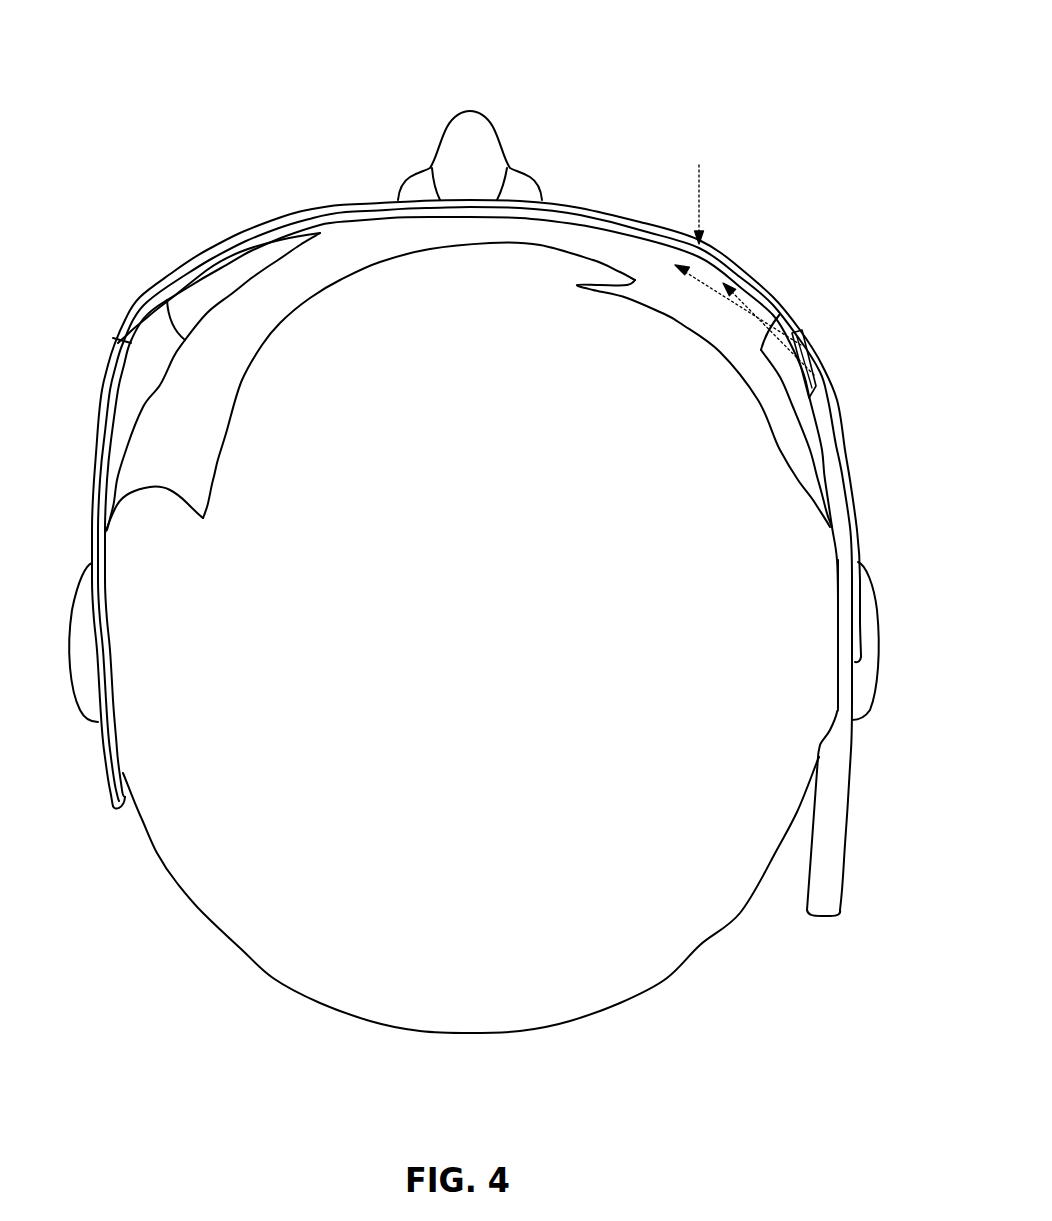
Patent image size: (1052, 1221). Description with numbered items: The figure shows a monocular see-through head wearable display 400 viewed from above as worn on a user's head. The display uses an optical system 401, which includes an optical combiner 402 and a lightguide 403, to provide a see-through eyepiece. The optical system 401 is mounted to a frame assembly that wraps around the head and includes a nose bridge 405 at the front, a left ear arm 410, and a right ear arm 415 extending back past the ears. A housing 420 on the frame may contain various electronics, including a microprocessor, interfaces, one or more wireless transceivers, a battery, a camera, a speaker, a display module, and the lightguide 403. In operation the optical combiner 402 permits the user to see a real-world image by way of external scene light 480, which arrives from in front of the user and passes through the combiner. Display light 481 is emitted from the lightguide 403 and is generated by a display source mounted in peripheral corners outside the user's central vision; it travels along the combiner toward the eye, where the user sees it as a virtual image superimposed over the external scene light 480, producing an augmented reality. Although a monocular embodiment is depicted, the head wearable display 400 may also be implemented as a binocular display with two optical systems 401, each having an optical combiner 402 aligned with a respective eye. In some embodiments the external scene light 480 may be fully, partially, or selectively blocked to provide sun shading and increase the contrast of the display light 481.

The head wearable display 400 is at (142, 60).
The optical system 401 is at (787, 362).
The optical combiner 402 is at (718, 282).
The lightguide 403 is at (808, 363).
The nose bridge 405 is at (375, 159).
The left ear arm 410 is at (80, 796).
The right ear arm 415 is at (857, 949).
The housing 420 is at (840, 526).
The external scene light 480 is at (698, 193).
The display light 481 is at (797, 325).